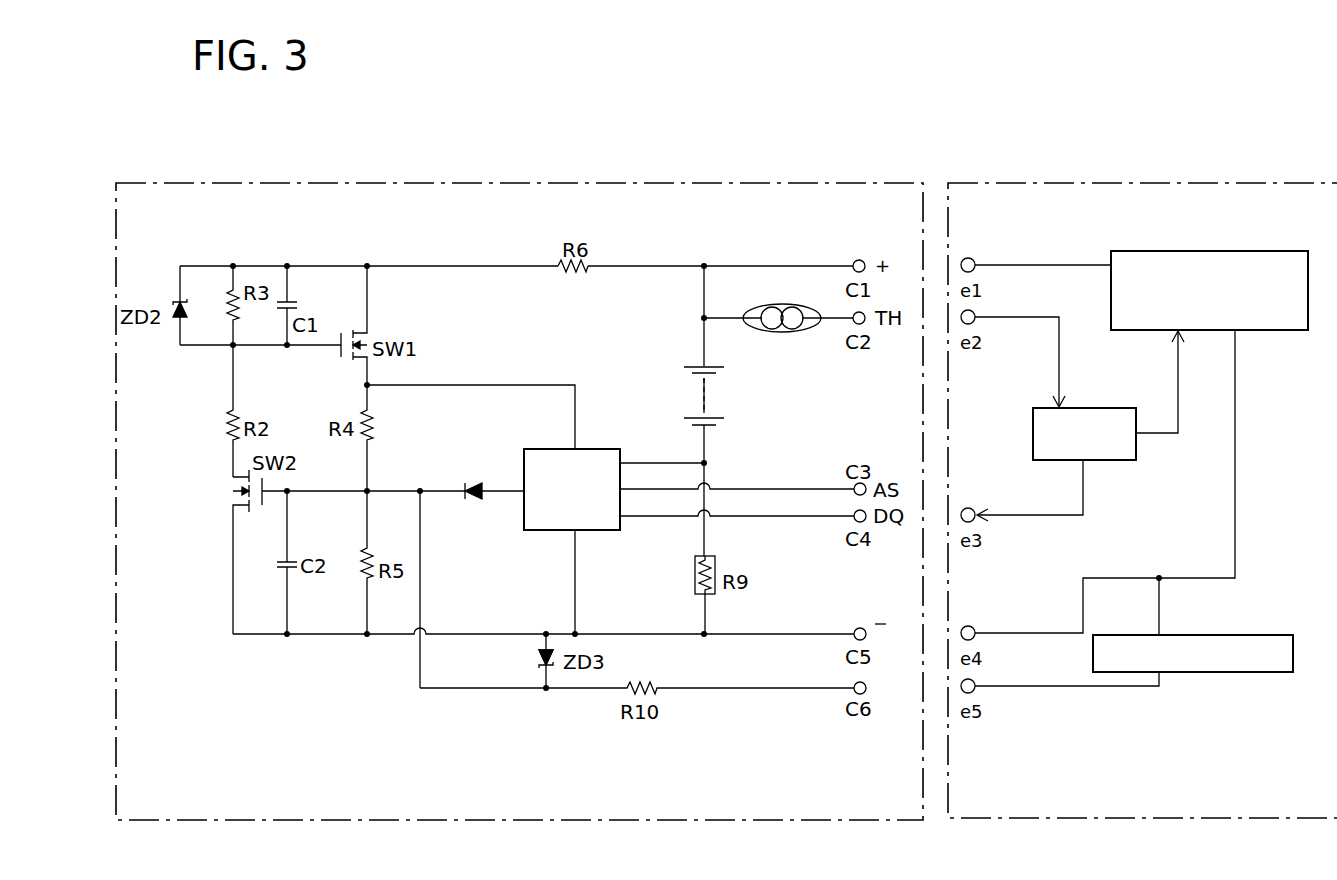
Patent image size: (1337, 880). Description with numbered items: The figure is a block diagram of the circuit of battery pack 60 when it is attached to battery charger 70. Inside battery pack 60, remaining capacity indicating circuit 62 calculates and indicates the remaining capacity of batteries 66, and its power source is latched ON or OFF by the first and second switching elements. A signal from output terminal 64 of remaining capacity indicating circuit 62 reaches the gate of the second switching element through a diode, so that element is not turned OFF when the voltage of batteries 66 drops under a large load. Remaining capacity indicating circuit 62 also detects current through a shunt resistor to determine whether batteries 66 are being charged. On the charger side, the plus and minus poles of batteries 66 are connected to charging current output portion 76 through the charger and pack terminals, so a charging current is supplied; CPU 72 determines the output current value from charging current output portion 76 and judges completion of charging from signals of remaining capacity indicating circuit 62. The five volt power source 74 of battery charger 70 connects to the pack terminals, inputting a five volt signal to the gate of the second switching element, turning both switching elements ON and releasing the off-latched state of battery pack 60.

The battery pack 60 is at (423, 183).
The remaining capacity indicating circuit 62 is at (587, 449).
The output terminal 64 is at (521, 484).
The batteries 66 is at (730, 406).
The battery charger 70 is at (1140, 183).
The CPU 72 is at (1033, 424).
The 5 V power source 74 is at (1238, 635).
The charging current output portion 76 is at (1252, 251).